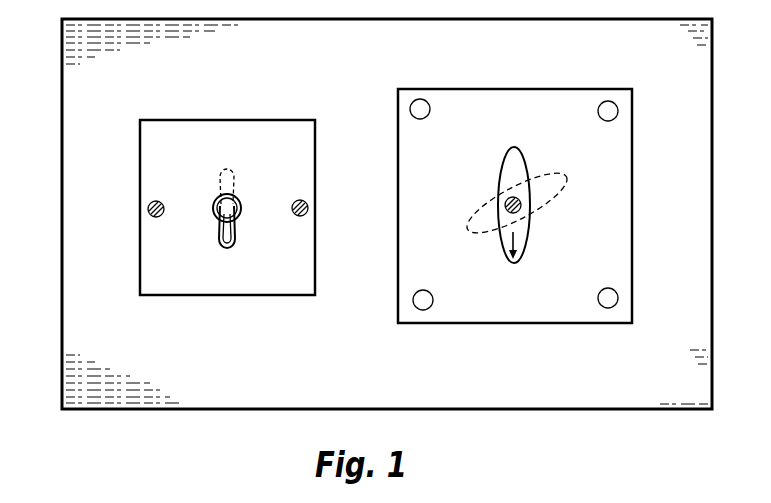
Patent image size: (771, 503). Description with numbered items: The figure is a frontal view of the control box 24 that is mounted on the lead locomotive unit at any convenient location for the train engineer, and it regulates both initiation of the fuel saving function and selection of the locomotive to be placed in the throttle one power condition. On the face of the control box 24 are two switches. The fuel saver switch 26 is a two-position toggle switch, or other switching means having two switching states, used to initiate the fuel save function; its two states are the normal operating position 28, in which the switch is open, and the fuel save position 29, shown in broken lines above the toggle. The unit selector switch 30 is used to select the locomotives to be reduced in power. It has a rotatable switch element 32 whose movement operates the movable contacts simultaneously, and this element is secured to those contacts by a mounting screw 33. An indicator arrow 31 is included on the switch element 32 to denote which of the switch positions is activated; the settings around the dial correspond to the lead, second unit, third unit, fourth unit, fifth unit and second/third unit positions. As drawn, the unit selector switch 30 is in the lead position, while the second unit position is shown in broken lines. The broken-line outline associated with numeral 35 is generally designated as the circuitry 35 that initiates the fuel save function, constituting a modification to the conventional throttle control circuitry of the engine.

The control box 24 is at (103, 395).
The fuel saver switch 26 is at (138, 256).
The normal operating position 28 is at (240, 240).
The fuel save position 29 is at (240, 172).
The unit selector switch 30 is at (636, 283).
The indicator arrow 31 is at (503, 242).
The rotatable switch element 32 is at (503, 242).
The mounting screw 33 is at (509, 194).
The circuitry 35 is at (473, 213).